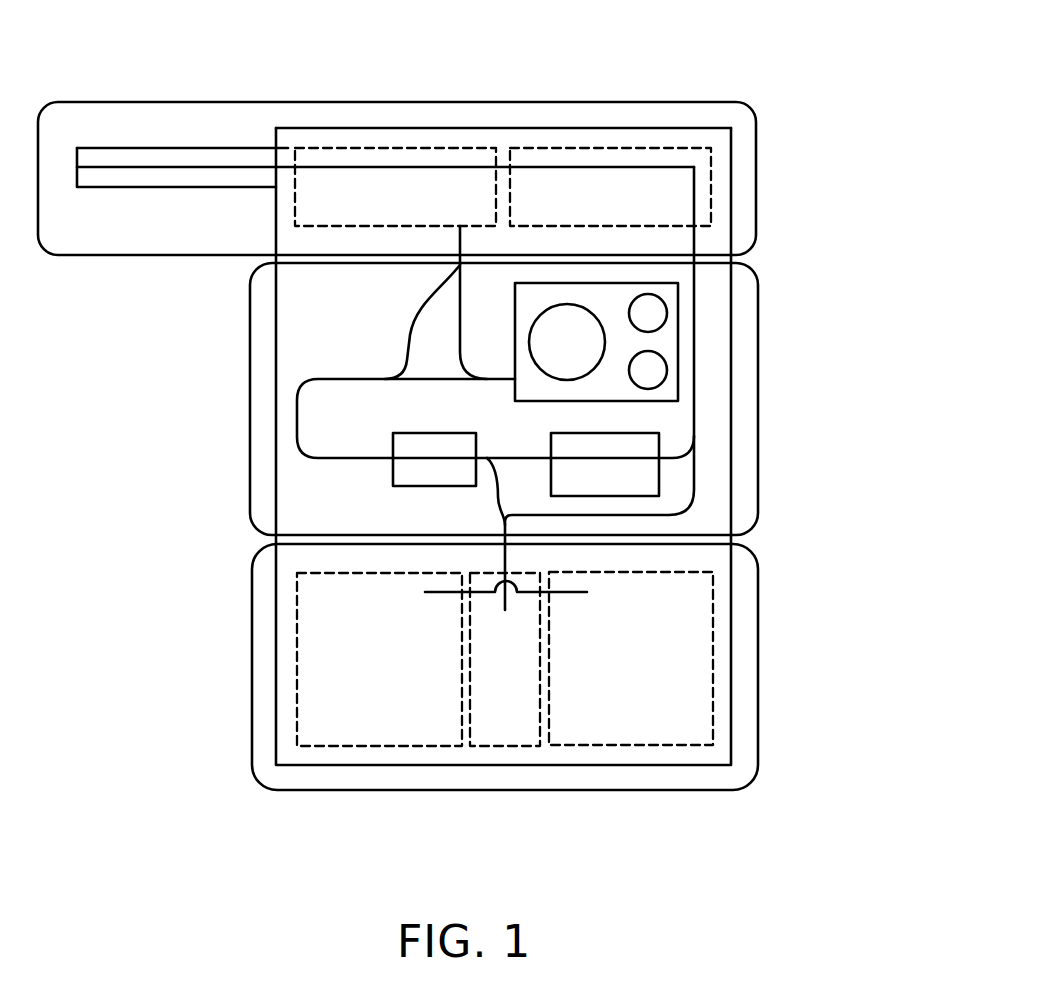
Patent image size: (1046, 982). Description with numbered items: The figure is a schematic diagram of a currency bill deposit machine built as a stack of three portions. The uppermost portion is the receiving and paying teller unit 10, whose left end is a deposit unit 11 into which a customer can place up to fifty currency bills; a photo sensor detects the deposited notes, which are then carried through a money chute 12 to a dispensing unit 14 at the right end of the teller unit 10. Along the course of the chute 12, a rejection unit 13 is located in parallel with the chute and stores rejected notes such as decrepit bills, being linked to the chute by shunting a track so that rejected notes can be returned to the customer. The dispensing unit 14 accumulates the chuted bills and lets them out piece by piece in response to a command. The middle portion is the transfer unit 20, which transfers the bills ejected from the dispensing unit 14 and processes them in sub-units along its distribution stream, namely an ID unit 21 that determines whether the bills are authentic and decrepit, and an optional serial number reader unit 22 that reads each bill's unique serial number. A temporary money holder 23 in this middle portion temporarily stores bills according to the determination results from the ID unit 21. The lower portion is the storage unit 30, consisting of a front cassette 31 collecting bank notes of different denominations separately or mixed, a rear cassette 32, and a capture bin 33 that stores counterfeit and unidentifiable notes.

The receiving and paying teller unit 10 is at (756, 135).
The deposit unit 11 is at (152, 148).
The money chute 12 is at (287, 165).
The rejection unit 13 is at (390, 147).
The dispensing unit 14 is at (589, 147).
The transfer unit 20 is at (758, 415).
The ID unit 21 is at (659, 473).
The serial number reader unit 22 is at (393, 470).
The temporary money holder 23 is at (678, 338).
The storage unit 30 is at (758, 631).
The front cassette 31 is at (297, 713).
The rear cassette 32 is at (713, 711).
The capture bin 33 is at (501, 746).